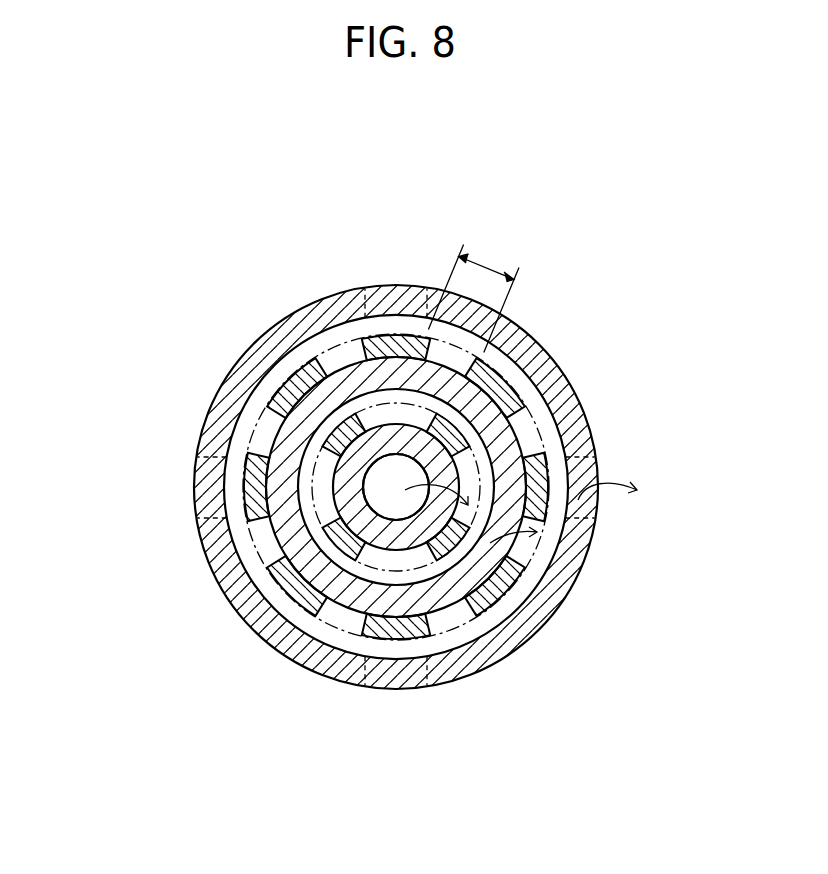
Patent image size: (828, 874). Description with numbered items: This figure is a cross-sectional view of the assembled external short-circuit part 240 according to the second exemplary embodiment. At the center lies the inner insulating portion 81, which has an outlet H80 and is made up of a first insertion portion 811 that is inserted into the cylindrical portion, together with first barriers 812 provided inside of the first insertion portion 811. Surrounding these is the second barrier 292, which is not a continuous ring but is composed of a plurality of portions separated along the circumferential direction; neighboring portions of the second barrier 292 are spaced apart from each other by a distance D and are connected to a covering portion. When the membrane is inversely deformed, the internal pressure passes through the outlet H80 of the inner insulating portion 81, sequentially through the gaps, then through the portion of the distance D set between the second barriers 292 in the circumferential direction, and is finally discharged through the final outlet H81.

The external short-circuit part 240 is at (416, 180).
The inner insulating portion 81 is at (396, 558).
The first insertion portion 811 is at (337, 668).
The first barriers 812 is at (490, 547).
The second barrier 292 is at (268, 564).
The outlet H80 is at (388, 479).
The final outlet H81 is at (558, 521).
The distance D is at (473, 292).